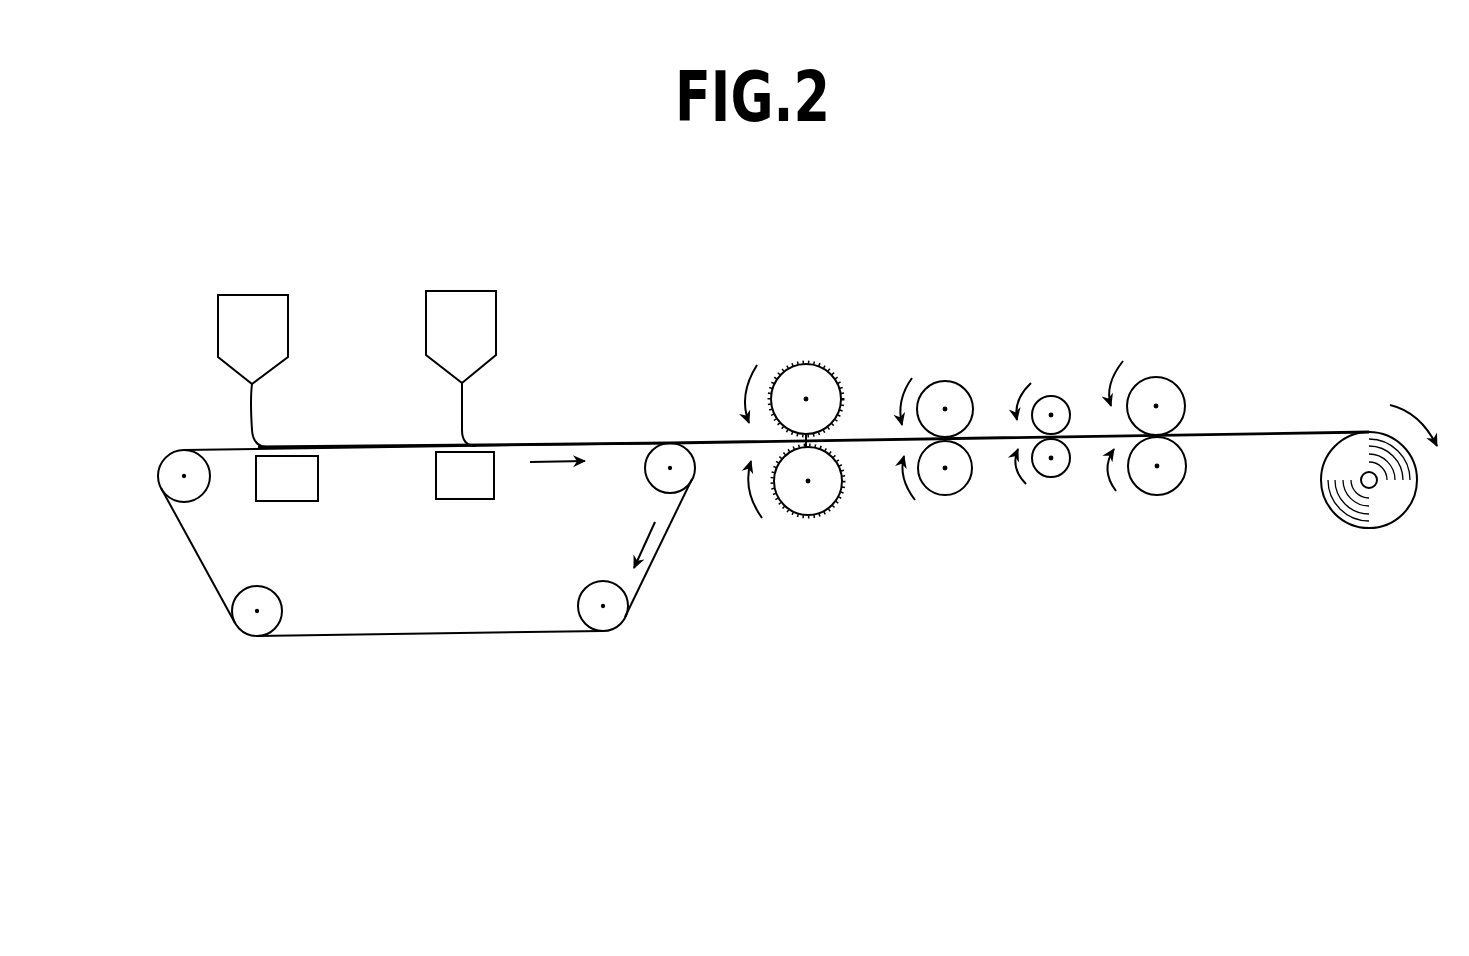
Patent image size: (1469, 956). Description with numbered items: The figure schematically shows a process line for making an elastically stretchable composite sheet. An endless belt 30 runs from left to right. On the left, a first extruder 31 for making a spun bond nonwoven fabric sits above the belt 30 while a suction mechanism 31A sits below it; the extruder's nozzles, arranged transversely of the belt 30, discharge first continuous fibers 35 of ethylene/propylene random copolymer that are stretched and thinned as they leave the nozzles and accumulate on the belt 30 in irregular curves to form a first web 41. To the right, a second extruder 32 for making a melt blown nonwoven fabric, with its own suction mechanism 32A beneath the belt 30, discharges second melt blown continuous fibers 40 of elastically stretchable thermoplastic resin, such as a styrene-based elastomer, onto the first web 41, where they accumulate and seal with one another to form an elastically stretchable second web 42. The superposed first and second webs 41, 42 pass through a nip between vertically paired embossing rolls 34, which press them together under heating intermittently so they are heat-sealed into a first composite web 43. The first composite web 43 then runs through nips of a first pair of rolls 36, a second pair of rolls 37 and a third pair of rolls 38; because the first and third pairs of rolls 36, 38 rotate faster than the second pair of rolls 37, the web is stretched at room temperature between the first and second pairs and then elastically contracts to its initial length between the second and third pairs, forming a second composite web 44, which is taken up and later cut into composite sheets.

The endless belt 30 is at (200, 562).
The first extruder 31 is at (215, 291).
The suction mechanism 31A is at (303, 501).
The second extruder 32 is at (423, 287).
The suction mechanism 32A is at (470, 499).
The embossing rolls 34 is at (813, 362).
The first continuous fibers 35 is at (250, 406).
The first pair of rolls 36 is at (950, 380).
The second pair of rolls 37 is at (1057, 396).
The third pair of rolls 38 is at (1170, 378).
The second melt blown continuous fibers 40 is at (461, 408).
The first web 41 is at (328, 445).
The second web 42 is at (533, 444).
The first composite web 43 is at (866, 446).
The second composite web 44 is at (1237, 438).